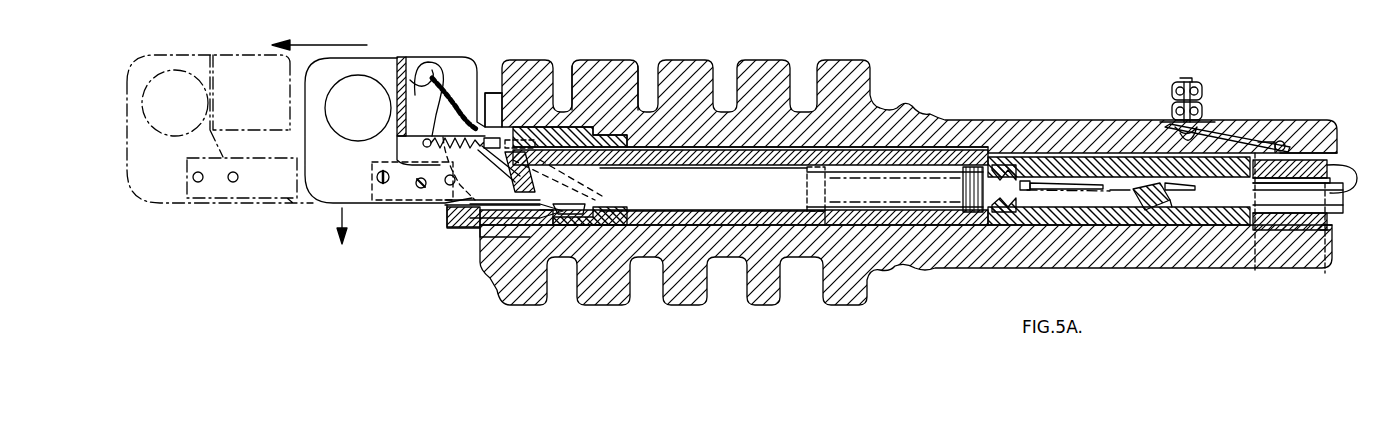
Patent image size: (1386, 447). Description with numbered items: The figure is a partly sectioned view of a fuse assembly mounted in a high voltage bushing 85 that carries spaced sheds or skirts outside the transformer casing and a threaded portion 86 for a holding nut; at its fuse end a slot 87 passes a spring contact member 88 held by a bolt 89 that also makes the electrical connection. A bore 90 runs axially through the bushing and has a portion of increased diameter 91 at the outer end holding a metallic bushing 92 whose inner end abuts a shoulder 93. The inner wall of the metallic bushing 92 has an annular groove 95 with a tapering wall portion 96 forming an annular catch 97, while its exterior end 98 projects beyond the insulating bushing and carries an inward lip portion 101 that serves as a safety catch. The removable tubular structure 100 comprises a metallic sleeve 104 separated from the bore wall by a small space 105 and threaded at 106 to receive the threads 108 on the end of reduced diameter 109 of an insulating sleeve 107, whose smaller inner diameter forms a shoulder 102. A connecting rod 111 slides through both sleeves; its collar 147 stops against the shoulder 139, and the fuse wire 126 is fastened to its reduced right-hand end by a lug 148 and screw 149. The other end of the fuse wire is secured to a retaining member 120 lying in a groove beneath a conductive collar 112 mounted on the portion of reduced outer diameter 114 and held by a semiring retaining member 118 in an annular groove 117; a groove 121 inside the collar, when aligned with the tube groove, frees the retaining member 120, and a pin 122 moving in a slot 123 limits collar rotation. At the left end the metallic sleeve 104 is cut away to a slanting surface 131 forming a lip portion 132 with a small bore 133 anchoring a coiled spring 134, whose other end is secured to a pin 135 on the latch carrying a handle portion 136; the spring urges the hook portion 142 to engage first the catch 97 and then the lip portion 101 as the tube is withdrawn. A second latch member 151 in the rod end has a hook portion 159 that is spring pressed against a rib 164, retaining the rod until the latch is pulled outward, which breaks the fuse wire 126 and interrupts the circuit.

The high voltage bushing 85 is at (684, 60).
The threaded portion 86 is at (912, 110).
The slot 87 is at (1293, 128).
The spring contact member 88 is at (1232, 135).
The bolt 89 is at (1187, 78).
The bore 90 is at (1050, 153).
The portion of increased diameter 91 is at (572, 100).
The metallic bushing 92 is at (560, 127).
The shoulder 93 is at (640, 120).
The annular groove 95 is at (588, 204).
The tapering wall portion 96 is at (580, 225).
The annular catch 97 is at (558, 230).
The exterior end 98 is at (465, 228).
The tubular structure 100 is at (722, 160).
The lip portion 101 is at (447, 226).
The shoulder 102 is at (972, 165).
The metallic sleeve 104 is at (668, 167).
The space 105 is at (718, 184).
The threads 106 is at (1012, 165).
The insulating sleeve 107 is at (1128, 225).
The threads 108 is at (1000, 215).
The end of reduced diameter 109 is at (1040, 225).
The connecting rod 111 is at (1155, 210).
The conductive collar 112 is at (1320, 180).
The portion of reduced outer diameter 114 is at (1265, 235).
The annular groove 117 is at (1330, 245).
The retaining member 118 is at (1322, 250).
The retaining member 120 is at (1320, 235).
The groove 121 is at (1300, 185).
The pin 122 is at (1265, 175).
The slot 123 is at (1268, 140).
The fuse wire 126 is at (1071, 198).
The slanting surface 131 is at (568, 172).
The lip portion 132 is at (490, 100).
The small bore 133 is at (527, 140).
The coiled spring 134 is at (462, 118).
The pin 135 is at (450, 178).
The handle portion 136 is at (416, 85).
The shoulder 139 is at (815, 226).
The hook portion 142 is at (545, 212).
The collar 147 is at (809, 160).
The lug 148 is at (1180, 210).
The screw 149 is at (1182, 192).
The latch member 151 is at (372, 58).
The hook portion 159 is at (483, 230).
The rib 164 is at (445, 203).